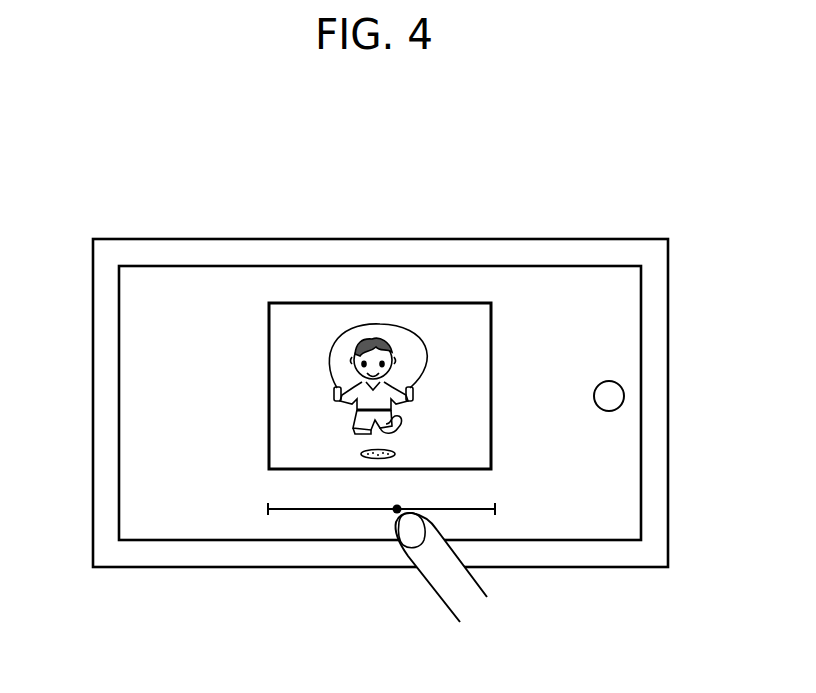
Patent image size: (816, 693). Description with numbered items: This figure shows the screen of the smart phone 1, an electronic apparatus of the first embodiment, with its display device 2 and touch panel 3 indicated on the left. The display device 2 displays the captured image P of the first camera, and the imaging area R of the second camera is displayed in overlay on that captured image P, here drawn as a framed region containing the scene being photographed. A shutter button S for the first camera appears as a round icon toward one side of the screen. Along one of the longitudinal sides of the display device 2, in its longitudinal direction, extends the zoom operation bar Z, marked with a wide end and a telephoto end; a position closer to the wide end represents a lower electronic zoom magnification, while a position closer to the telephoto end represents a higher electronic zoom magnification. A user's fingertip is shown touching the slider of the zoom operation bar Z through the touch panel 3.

The smart phone 1 is at (667, 216).
The display device 2 is at (334, 403).
The touch panel 3 is at (145, 361).
The captured image P is at (334, 363).
The imaging area R is at (455, 303).
The shutter button S is at (624, 395).
The zoom operation bar Z is at (300, 509).